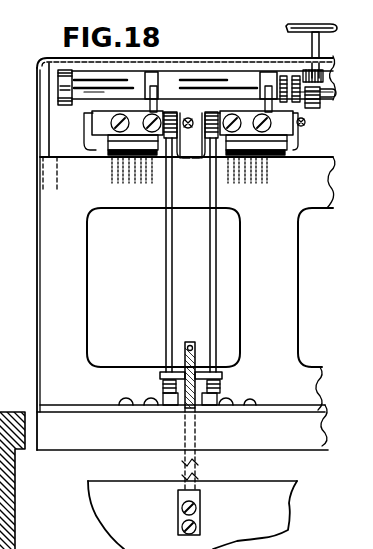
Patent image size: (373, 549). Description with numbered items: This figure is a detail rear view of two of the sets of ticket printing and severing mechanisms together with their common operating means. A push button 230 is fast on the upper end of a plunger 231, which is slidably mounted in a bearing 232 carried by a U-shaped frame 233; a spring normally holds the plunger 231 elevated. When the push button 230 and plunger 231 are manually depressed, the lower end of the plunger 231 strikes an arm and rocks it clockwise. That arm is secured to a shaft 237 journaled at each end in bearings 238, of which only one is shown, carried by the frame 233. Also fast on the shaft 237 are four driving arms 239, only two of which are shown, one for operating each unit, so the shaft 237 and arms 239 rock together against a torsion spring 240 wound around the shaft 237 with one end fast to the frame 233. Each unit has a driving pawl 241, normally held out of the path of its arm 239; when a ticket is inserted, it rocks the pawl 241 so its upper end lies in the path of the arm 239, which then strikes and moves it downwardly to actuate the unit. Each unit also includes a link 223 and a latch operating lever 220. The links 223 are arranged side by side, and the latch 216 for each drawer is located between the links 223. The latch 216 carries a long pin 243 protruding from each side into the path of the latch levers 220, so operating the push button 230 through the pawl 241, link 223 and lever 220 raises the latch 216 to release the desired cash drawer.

The latch 216 is at (199, 327).
The latch operating lever 220 is at (163, 386).
The link 223 is at (166, 240).
The push button 230 is at (287, 28).
The plunger 231 is at (313, 49).
The bearing 232 is at (306, 122).
The U-shaped frame 233 is at (53, 112).
The shaft 237 is at (202, 83).
The bearing 238 is at (58, 85).
The driving arm 239 is at (268, 77).
The torsion spring 240 is at (283, 115).
The driving pawl 241 is at (160, 111).
The long pin 243 is at (222, 375).